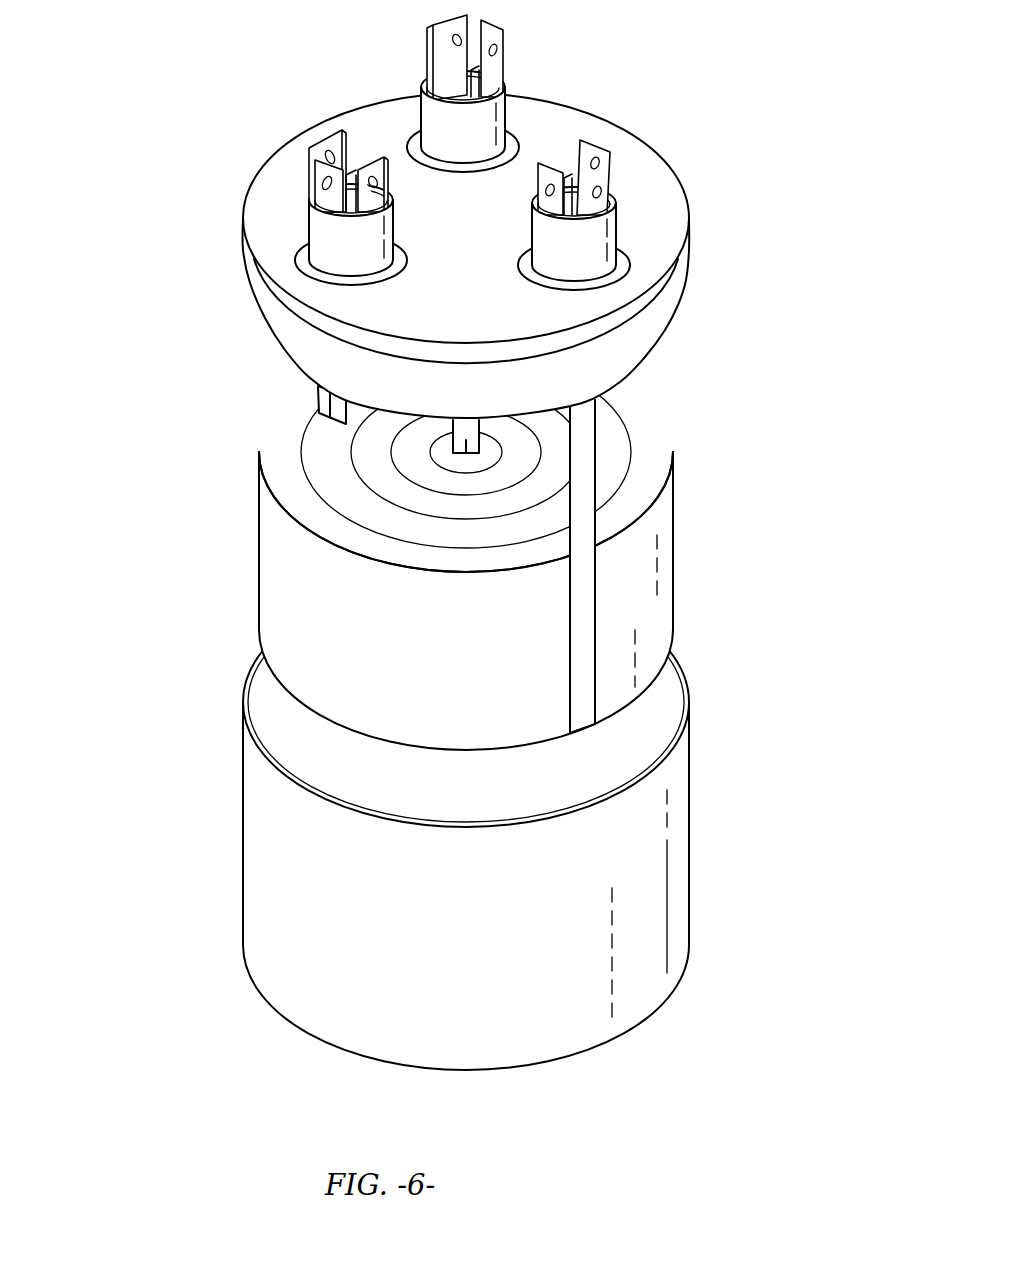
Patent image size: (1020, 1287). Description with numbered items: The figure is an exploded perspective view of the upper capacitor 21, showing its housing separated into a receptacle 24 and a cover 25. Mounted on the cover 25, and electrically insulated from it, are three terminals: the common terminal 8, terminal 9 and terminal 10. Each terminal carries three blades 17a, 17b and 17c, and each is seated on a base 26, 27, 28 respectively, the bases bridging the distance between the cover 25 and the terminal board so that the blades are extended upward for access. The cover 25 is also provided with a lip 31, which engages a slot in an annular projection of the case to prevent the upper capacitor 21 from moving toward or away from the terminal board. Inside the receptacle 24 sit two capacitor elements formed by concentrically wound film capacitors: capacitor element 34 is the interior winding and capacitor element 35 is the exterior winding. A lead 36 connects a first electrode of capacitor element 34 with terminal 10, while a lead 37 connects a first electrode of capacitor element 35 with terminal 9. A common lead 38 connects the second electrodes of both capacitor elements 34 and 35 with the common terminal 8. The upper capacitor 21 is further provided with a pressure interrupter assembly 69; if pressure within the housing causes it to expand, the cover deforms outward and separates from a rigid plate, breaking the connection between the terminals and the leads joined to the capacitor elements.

The common terminal 8 is at (618, 238).
The terminal 9 is at (300, 234).
The terminal 10 is at (510, 108).
The blade 17a is at (327, 143).
The blade 17b is at (323, 173).
The blade 17c is at (370, 158).
The upper capacitor 21 is at (212, 768).
The receptacle 24 is at (677, 835).
The cover 25 is at (567, 123).
The base 26 is at (620, 218).
The base 27 is at (313, 213).
The base 28 is at (443, 107).
The lip 31 is at (675, 277).
The capacitor element 34 is at (410, 470).
The capacitor element 35 is at (310, 428).
The lead 36 is at (464, 442).
The lead 37 is at (330, 398).
The common lead 38 is at (650, 620).
The pressure interrupter assembly 69 is at (277, 318).